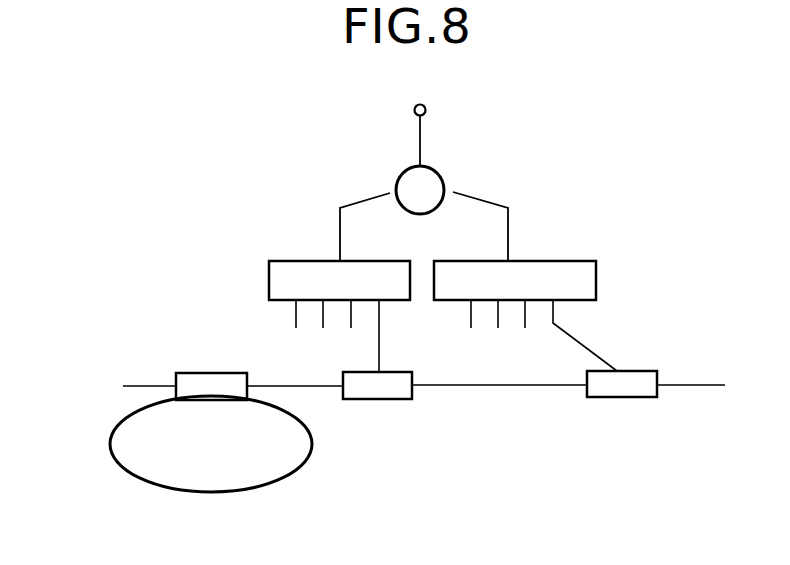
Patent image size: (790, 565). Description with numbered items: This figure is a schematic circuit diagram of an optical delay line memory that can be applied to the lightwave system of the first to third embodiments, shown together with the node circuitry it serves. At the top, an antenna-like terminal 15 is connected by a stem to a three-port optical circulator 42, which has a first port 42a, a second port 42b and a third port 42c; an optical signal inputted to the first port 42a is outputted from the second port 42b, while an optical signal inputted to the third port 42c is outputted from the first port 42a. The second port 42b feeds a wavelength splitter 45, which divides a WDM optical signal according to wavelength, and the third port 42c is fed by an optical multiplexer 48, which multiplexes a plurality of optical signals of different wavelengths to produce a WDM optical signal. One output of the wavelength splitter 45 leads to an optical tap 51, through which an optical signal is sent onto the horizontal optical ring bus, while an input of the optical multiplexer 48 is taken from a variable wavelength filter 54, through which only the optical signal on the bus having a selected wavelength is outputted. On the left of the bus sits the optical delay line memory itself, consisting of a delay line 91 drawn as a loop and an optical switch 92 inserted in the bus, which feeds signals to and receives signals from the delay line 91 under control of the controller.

The antenna 15 is at (426, 109).
The optical circulator 42 is at (440, 178).
The first port 42a is at (413, 158).
The second port 42b is at (390, 193).
The third port 42c is at (455, 192).
The wavelength splitter 45 is at (269, 282).
The optical multiplexer 48 is at (596, 280).
The optical tap 51 is at (378, 399).
The variable wavelength filter 54 is at (615, 398).
The delay line 91 is at (110, 453).
The optical switch 92 is at (206, 373).